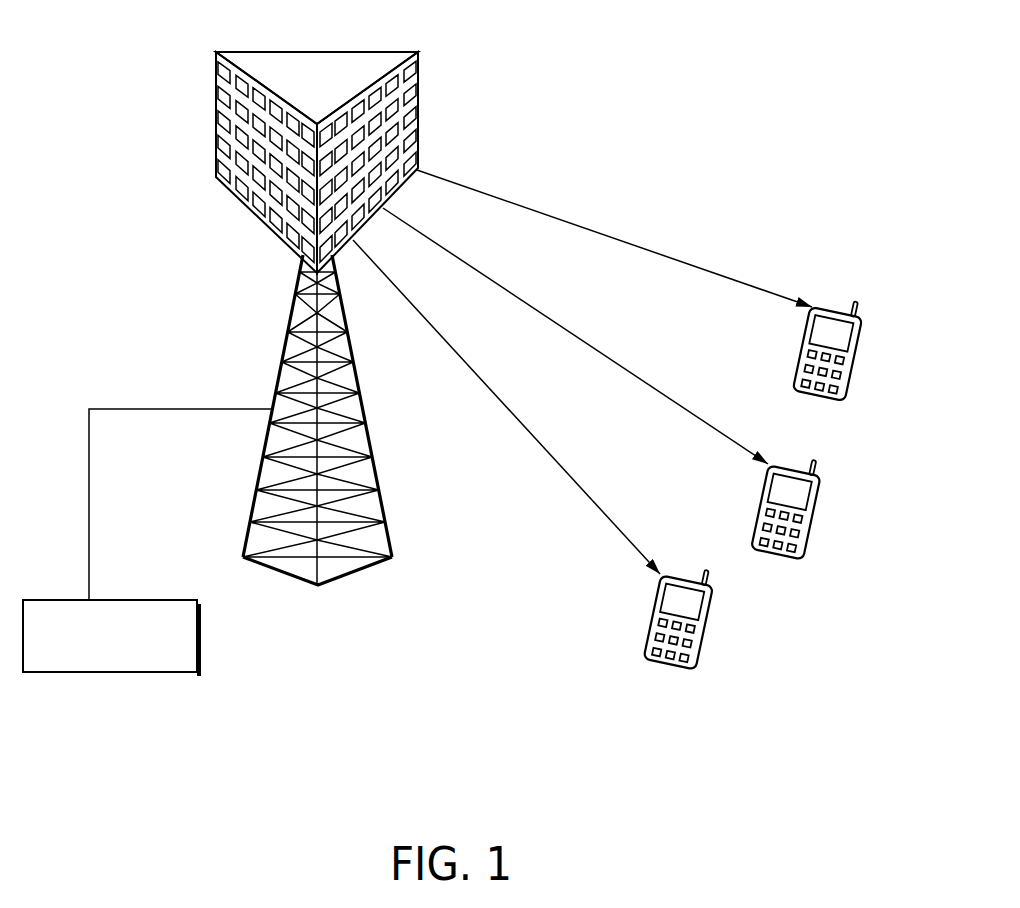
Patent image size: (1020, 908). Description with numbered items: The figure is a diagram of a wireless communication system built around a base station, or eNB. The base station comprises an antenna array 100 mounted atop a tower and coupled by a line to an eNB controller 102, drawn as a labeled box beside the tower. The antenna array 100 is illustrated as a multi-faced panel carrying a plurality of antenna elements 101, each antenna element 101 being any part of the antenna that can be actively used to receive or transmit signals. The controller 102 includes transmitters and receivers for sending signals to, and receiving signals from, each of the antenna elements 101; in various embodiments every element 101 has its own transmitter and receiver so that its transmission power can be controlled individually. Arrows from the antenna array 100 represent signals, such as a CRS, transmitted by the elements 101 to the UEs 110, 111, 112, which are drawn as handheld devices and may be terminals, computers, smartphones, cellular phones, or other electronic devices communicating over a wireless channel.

The antenna array 100 is at (350, 149).
The antenna element 101 is at (413, 113).
The eNB controller 102 is at (162, 600).
The UE 110 is at (857, 360).
The UE 111 is at (817, 512).
The UE 112 is at (708, 625).